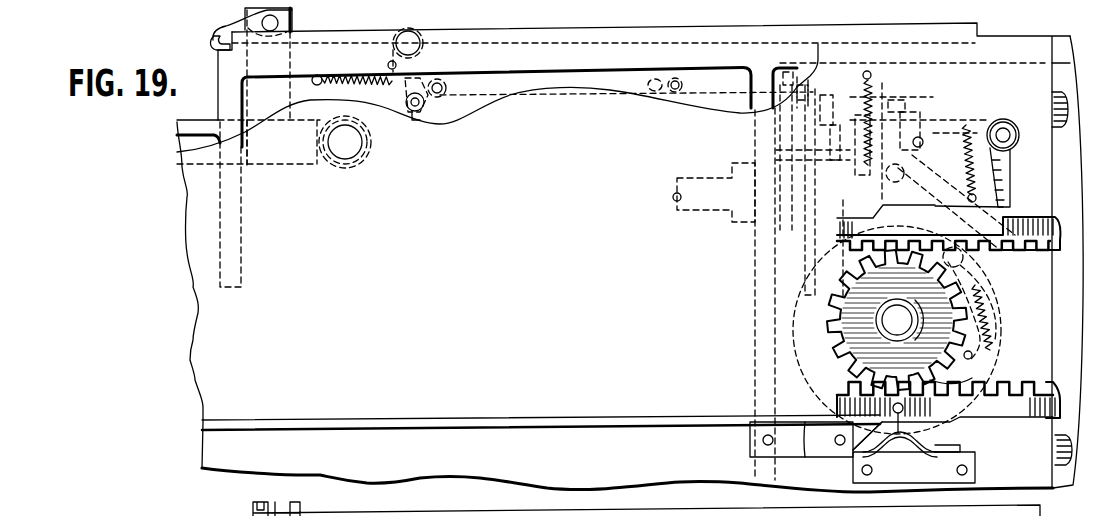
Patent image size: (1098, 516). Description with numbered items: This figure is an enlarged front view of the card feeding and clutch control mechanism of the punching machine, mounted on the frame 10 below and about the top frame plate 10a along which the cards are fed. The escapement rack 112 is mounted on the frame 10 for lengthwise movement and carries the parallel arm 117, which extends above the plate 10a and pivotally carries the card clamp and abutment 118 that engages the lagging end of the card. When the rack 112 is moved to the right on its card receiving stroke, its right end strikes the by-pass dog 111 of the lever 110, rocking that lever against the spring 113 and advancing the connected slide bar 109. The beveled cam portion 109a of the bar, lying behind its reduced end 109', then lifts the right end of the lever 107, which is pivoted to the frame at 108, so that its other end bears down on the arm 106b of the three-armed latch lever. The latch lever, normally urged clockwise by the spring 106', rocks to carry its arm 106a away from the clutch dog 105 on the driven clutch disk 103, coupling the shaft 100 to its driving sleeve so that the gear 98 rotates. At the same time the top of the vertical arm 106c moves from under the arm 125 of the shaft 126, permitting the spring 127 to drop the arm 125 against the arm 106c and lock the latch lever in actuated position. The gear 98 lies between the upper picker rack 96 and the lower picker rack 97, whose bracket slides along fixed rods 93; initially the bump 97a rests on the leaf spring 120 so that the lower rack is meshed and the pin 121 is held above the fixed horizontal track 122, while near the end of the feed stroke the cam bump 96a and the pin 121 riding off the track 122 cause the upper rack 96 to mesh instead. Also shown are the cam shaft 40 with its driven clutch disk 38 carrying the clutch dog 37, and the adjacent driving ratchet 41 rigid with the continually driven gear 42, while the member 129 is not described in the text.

The frame 10 is at (195, 358).
The top frame plate 10a is at (520, 43).
The clutch dog 37 is at (830, 116).
The driven clutch disk 38 is at (810, 260).
The cam shaft 40 is at (700, 211).
The driving ratchet 41 is at (831, 140).
The gear 42 is at (906, 101).
The fixed rods 93 is at (1057, 98).
The upper picker rack 96 is at (1027, 222).
The cam bump 96a is at (954, 211).
The lower picker rack 97 is at (1013, 402).
The bump 97a is at (862, 430).
The gear 98 is at (975, 380).
The shaft 100 is at (893, 322).
The driven clutch disk 103 is at (995, 352).
The clutch dog 105 is at (992, 292).
The spring 106' is at (883, 122).
The arm of latch lever 106a is at (929, 141).
The arm of latch lever 106b is at (886, 215).
The vertical arm of latch lever 106c is at (880, 106).
The lever 107 is at (800, 148).
The pivot 108 is at (755, 125).
The slide bar 109 is at (497, 76).
The reduced end of slide bar 109' is at (824, 56).
The beveled cam portion 109a is at (775, 70).
The lever 110 is at (422, 72).
The by-pass dog 111 is at (422, 108).
The escapement rack 112 is at (370, 122).
The spring 113 is at (343, 94).
The parallel arm 117 is at (293, 52).
The card clamp and abutment 118 is at (225, 33).
The leaf spring 120 is at (942, 435).
The pin 121 is at (898, 414).
The fixed horizontal track 122 is at (801, 452).
The arm 125 is at (977, 121).
The shaft 126 is at (1005, 128).
The spring 127 is at (963, 122).
The lever arm 129 is at (1003, 167).